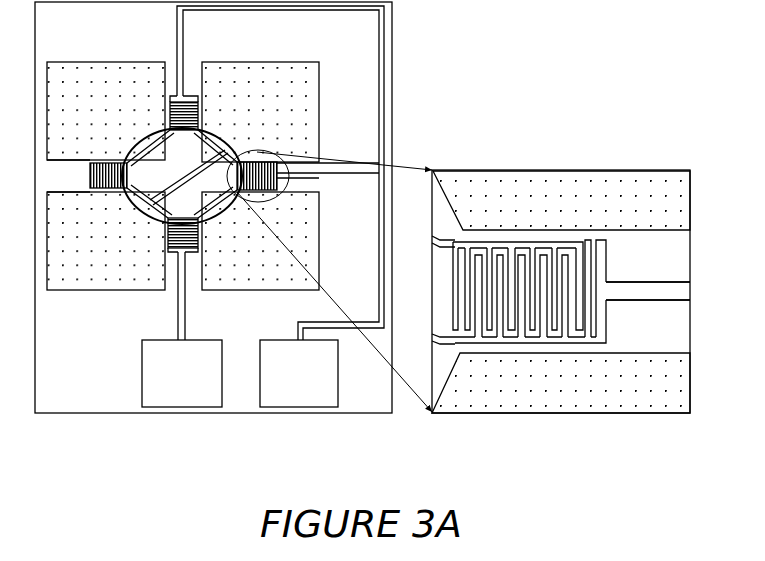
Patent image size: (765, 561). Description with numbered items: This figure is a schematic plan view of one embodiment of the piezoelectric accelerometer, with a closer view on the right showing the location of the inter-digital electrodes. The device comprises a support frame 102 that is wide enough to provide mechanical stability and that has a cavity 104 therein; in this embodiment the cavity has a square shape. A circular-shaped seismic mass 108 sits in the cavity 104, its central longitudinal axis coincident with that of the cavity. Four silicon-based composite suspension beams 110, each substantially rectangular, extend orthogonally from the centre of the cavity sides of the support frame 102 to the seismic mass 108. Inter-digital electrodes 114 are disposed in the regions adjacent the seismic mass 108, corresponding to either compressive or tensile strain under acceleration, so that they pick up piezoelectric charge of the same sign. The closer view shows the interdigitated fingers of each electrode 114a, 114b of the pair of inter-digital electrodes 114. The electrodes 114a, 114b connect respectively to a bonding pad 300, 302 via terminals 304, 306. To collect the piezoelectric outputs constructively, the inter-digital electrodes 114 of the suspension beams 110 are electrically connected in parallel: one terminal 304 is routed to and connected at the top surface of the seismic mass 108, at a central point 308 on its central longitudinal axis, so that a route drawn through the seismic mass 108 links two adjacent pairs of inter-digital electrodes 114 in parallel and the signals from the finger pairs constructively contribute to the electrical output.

The support frame 102 is at (87, 40).
The cavity 104 is at (87, 93).
The seismic mass 108 is at (201, 210).
The suspension beam 110 is at (87, 186).
The inter-digital electrodes 114 is at (540, 292).
The first electrode 114a is at (505, 331).
The second electrode 114b is at (557, 331).
The bonding pad 300 is at (200, 382).
The bonding pad 302 is at (317, 382).
The terminal 304 is at (450, 245).
The terminal 306 is at (637, 286).
The central point 308 is at (175, 173).